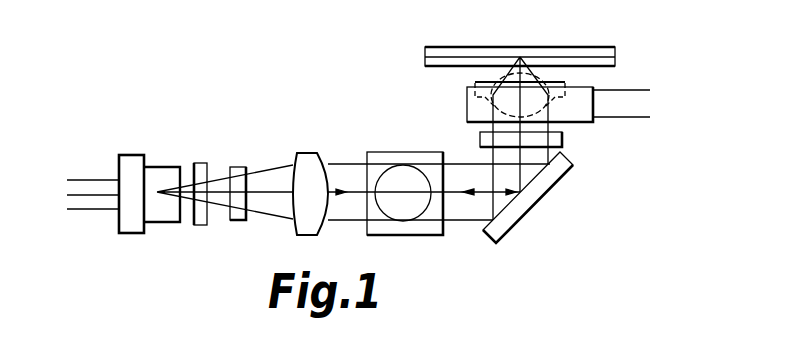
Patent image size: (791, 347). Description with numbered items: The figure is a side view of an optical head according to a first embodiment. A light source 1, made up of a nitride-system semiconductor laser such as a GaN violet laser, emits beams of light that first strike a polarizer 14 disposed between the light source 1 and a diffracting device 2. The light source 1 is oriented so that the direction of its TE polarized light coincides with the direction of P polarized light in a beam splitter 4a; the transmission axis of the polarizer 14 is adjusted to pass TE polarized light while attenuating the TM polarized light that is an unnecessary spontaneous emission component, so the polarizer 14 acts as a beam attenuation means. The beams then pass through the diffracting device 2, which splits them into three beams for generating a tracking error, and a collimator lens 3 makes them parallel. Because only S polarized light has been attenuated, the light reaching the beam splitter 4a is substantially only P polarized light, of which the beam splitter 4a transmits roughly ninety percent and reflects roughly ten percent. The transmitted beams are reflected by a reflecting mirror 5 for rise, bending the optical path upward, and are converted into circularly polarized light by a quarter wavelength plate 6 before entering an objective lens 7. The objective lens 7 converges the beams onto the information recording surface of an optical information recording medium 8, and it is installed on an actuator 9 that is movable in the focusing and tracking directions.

The light source 1 is at (165, 167).
The diffracting device 2 is at (240, 167).
The collimator lens 3 is at (305, 153).
The beam splitter 4a is at (400, 152).
The reflecting mirror 5 is at (567, 177).
The 1/4 wavelength plate 6 is at (563, 136).
The objective lens 7 is at (557, 82).
The optical information recording medium 8 is at (616, 49).
The actuator 9 is at (593, 102).
The polarizer 14 is at (200, 225).